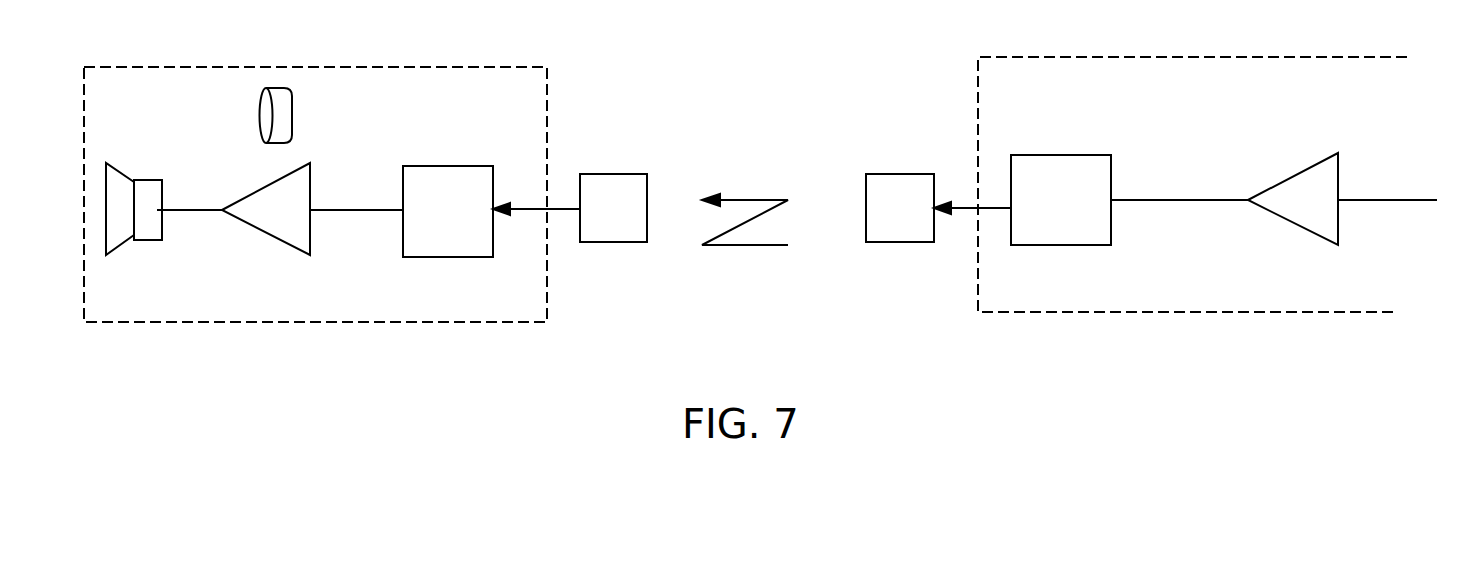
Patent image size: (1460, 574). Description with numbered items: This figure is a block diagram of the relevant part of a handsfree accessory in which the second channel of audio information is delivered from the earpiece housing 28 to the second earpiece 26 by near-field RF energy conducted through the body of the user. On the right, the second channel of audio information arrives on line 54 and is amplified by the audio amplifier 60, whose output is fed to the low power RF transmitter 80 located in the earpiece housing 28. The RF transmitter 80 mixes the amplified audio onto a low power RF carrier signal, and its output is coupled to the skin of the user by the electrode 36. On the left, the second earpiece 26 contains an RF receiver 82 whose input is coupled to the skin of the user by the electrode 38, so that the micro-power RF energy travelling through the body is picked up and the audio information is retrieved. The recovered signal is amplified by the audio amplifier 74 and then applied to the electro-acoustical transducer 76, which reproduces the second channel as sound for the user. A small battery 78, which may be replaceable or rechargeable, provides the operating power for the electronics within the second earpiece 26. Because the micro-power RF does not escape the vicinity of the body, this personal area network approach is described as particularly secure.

The second earpiece 26 is at (315, 170).
The earpiece housing 28 is at (1192, 160).
The electrode 36 is at (870, 174).
The electrode 38 is at (649, 175).
The line 54 is at (1387, 232).
The audio amplifier 60 is at (1281, 182).
The audio amplifier 74 is at (312, 227).
The electro-acoustical transducer 76 is at (164, 185).
The battery 78 is at (322, 112).
The RF transmitter 80 is at (1091, 180).
The RF receiver 82 is at (491, 186).